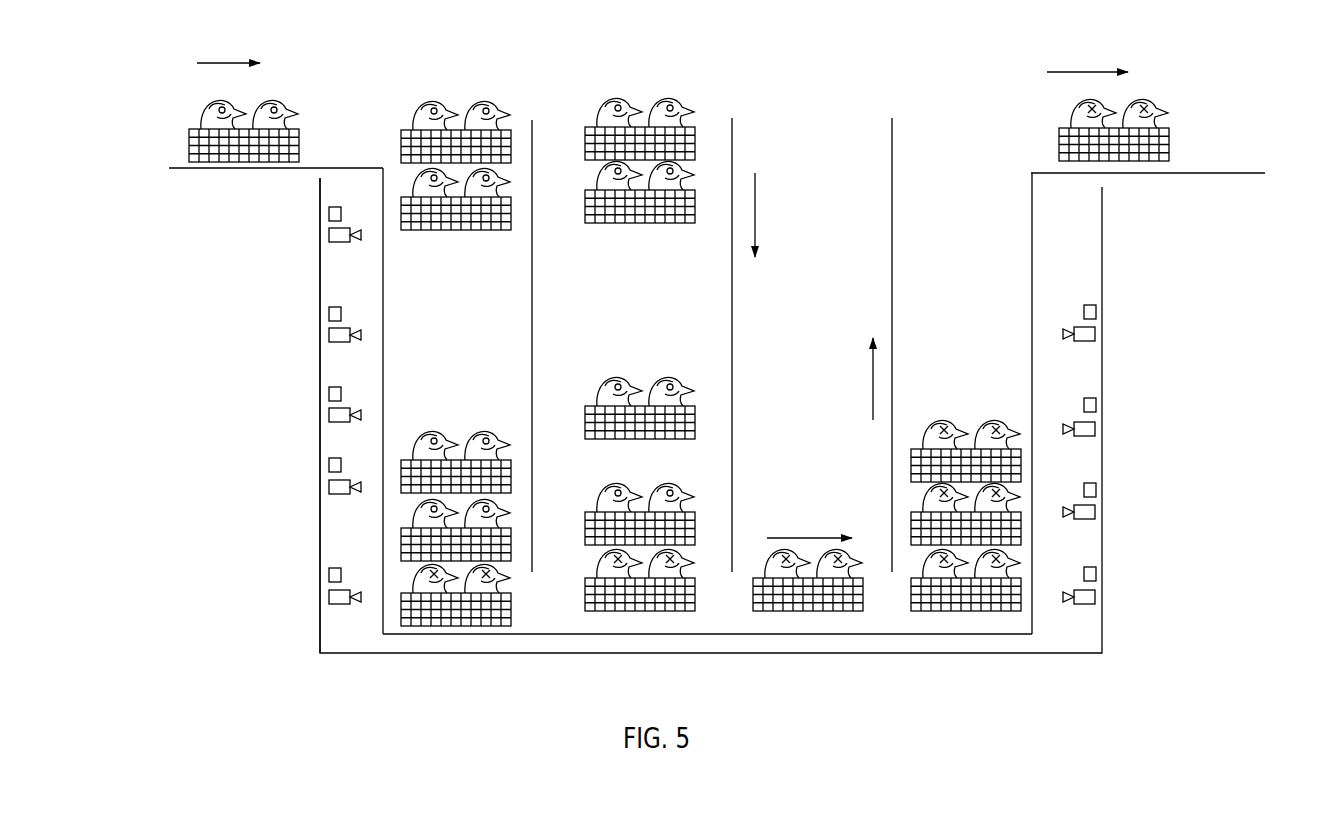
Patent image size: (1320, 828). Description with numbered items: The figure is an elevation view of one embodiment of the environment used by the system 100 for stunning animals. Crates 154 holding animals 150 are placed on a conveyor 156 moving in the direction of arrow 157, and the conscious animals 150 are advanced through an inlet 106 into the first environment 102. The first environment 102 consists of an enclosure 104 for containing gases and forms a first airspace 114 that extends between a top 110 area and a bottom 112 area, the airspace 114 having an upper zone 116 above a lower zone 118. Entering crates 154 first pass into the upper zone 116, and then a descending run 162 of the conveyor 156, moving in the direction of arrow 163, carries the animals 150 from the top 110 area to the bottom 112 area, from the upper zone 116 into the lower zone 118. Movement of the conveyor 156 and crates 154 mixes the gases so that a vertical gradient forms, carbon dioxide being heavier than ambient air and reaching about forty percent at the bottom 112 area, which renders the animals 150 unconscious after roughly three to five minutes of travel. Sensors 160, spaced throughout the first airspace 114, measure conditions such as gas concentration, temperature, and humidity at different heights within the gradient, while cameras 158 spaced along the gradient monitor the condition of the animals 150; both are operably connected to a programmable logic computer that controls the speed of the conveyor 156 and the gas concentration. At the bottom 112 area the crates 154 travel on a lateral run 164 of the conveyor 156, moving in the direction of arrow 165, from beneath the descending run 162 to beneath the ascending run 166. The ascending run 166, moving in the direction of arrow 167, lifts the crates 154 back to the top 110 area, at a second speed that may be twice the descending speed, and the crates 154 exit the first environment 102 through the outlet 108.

The system 100 is at (637, 55).
The first environment 102 is at (700, 70).
The enclosure 104 is at (320, 418).
The inlet 106 is at (386, 88).
The outlet 108 is at (1020, 122).
The top area 110 is at (355, 258).
The bottom area 112 is at (305, 578).
The first airspace 114 is at (780, 100).
The upper zone 116 is at (383, 265).
The lower zone 118 is at (405, 521).
The animal 150 is at (213, 107).
The crate 154 is at (300, 135).
The conveyor 156 is at (199, 177).
The arrow 157 is at (228, 63).
The camera 158 is at (329, 234).
The sensor 160 is at (329, 213).
The descending run 162 is at (383, 400).
The arrow 163 is at (756, 215).
The lateral run 164 is at (668, 634).
The arrow 165 is at (800, 538).
The ascending run 166 is at (1032, 290).
The arrow 167 is at (873, 402).